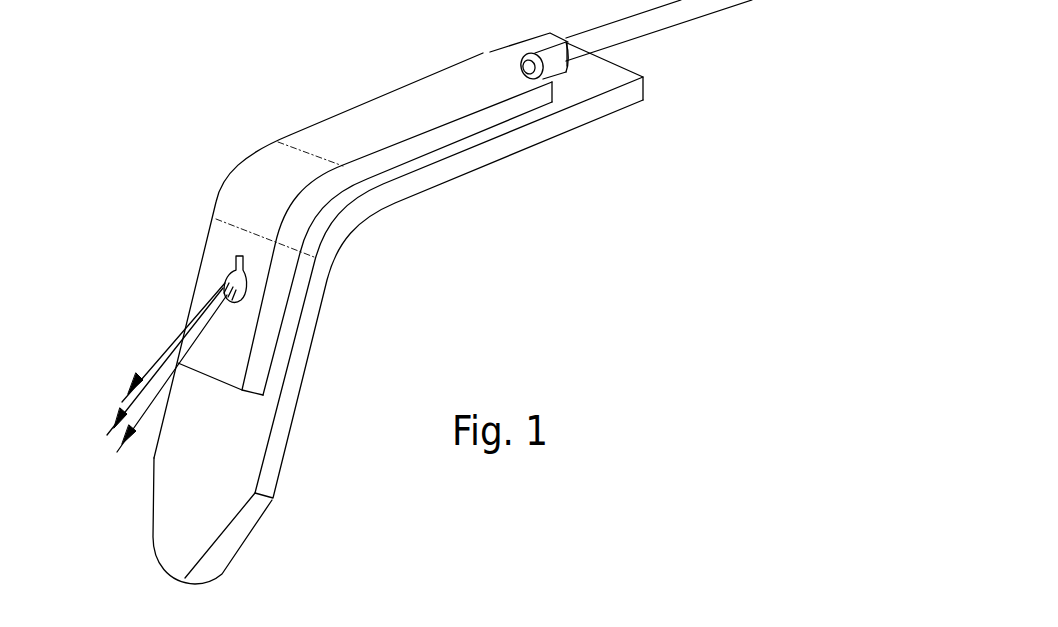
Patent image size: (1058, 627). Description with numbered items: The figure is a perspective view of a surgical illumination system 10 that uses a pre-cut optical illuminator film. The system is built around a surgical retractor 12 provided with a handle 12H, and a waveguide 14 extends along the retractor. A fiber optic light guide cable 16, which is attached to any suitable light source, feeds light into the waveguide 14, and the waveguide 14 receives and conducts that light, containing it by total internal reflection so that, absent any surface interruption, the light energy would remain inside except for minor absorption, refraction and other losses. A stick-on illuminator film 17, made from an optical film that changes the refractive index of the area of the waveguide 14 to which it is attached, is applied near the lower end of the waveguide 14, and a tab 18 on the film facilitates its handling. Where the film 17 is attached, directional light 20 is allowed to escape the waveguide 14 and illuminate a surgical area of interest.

The surgical illumination system 10 is at (171, 161).
The surgical retractor 12 is at (427, 175).
The handle 12H is at (588, 88).
The waveguide 14 is at (403, 93).
The fiber optic light guide cable 16 is at (670, 20).
The stick-on illuminator film 17 is at (226, 283).
The tab 18 is at (228, 262).
The directional light 20 is at (153, 362).